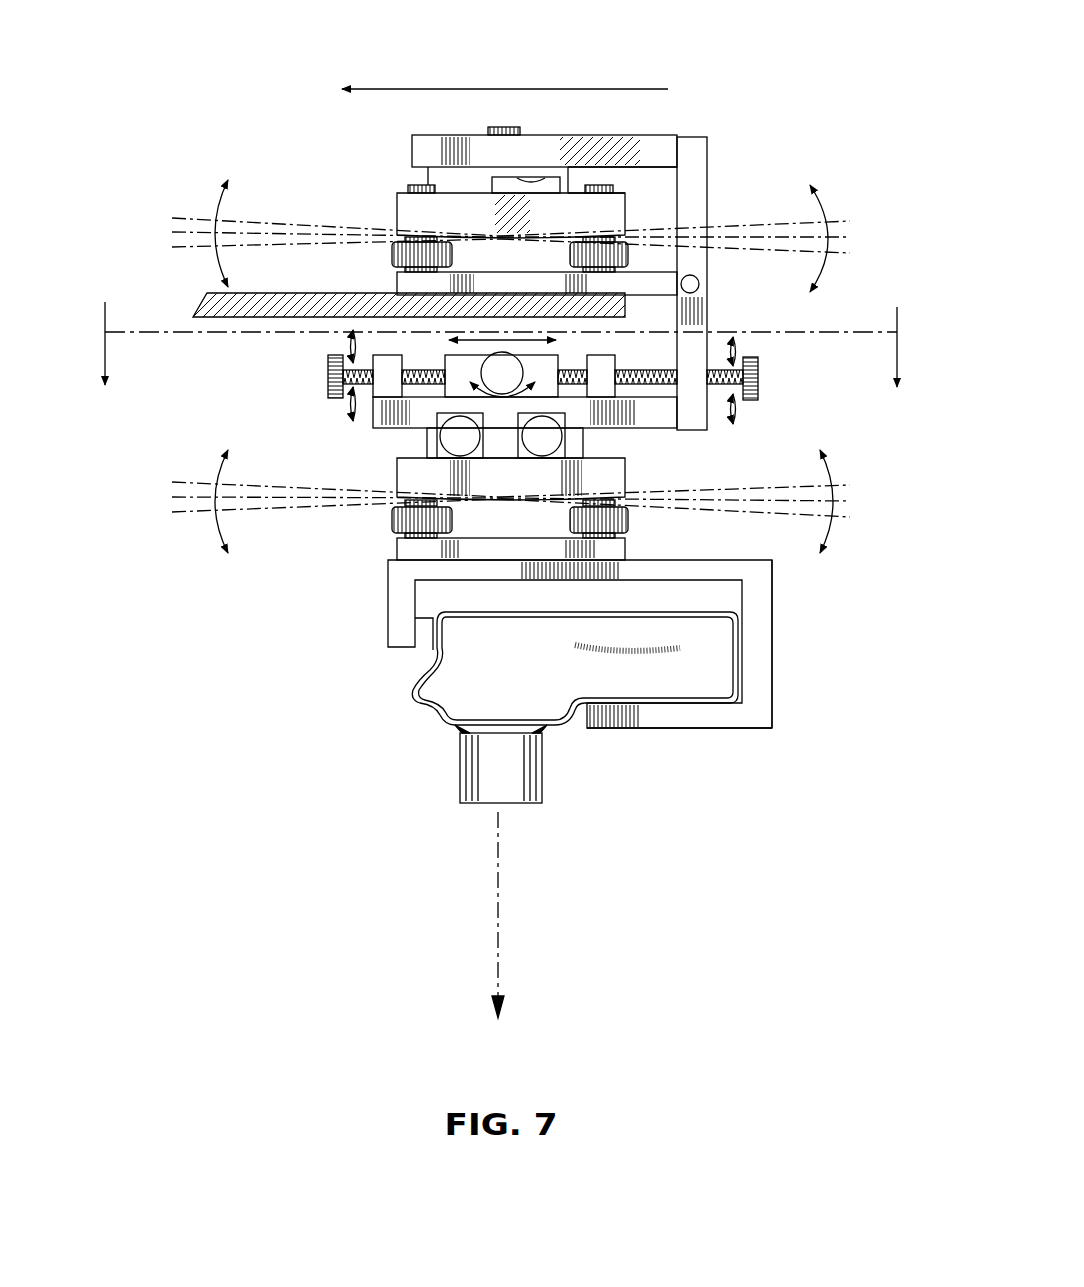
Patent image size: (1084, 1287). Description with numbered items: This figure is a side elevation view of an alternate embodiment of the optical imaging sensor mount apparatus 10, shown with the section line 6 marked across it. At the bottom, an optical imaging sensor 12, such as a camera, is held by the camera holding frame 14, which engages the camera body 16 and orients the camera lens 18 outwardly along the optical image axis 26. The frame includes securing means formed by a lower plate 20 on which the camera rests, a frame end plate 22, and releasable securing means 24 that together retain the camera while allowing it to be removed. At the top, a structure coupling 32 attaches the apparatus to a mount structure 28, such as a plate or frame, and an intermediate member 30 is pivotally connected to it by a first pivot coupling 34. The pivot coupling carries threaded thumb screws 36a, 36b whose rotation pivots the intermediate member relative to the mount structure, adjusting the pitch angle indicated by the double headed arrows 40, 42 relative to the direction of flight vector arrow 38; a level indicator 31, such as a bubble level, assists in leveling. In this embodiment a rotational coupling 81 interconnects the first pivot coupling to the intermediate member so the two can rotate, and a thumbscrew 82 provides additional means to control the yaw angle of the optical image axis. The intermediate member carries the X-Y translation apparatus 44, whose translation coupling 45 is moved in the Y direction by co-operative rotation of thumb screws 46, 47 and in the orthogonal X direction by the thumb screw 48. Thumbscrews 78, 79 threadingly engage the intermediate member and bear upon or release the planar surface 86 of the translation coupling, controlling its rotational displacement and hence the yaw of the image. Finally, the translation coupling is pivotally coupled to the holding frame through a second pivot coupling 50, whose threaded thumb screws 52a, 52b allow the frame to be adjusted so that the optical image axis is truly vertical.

The section line 6- 6 is at (501, 364).
The optical imaging sensor mount apparatus 10 is at (867, 480).
The optical imaging sensor 12 is at (457, 700).
The camera holding frame 14 is at (772, 688).
The camera body 16 is at (490, 663).
The camera lens 18 is at (537, 777).
The lower plate 20 is at (685, 728).
The frame end plate 22 is at (772, 620).
The releasable securing means 24 is at (420, 637).
The optical image axis 26 is at (498, 893).
The mount structure 28 is at (196, 300).
The intermediate member 30 is at (707, 150).
The level indicator 31 is at (548, 177).
The structure coupling 32 is at (397, 285).
The first pivot coupling 34 is at (614, 190).
The threaded thumb screw 36a is at (400, 250).
The threaded thumb screw 36b is at (628, 262).
The direction of flight vector arrow 38 is at (410, 86).
The double headed arrow 40 is at (213, 200).
The double headed arrow 42 is at (825, 208).
The X-Y translation apparatus 44 is at (253, 402).
The translation coupling 45 is at (427, 432).
The thumb screw 46 is at (328, 376).
The thumb screw 47 is at (758, 378).
The thumb screw 48 is at (520, 372).
The second pivot coupling 50 is at (395, 540).
The threaded thumb screw 52a is at (392, 520).
The threaded thumb screw 52b is at (628, 520).
The thumbscrew 78 is at (552, 443).
The thumbscrew 79 is at (462, 442).
The rotational coupling 81 is at (505, 126).
The thumbscrew 82 is at (700, 284).
The planar surface 86 is at (502, 447).